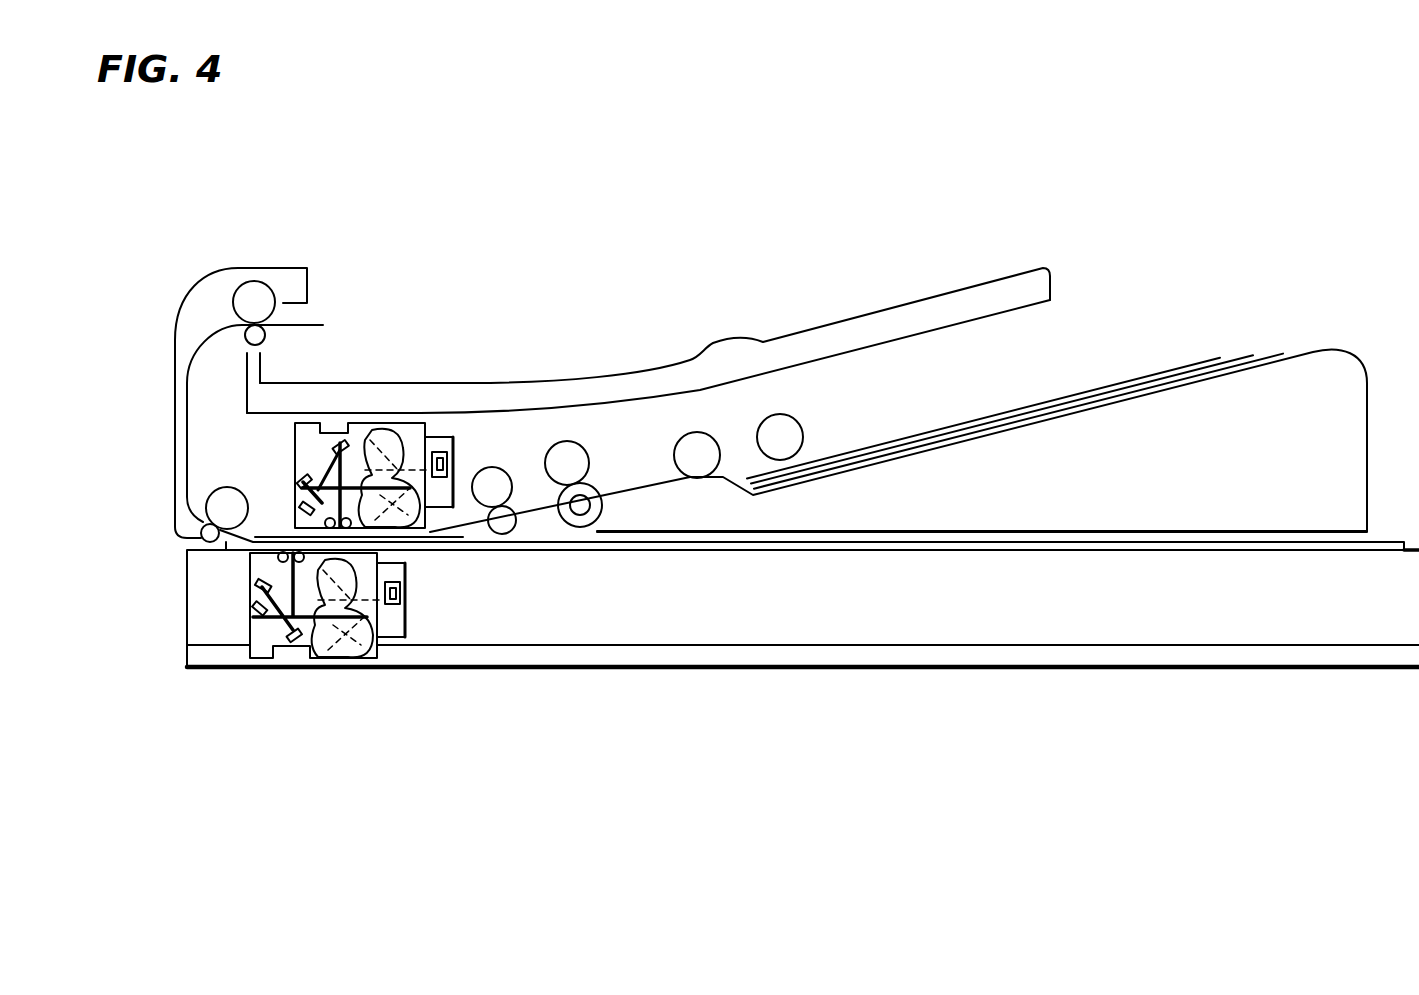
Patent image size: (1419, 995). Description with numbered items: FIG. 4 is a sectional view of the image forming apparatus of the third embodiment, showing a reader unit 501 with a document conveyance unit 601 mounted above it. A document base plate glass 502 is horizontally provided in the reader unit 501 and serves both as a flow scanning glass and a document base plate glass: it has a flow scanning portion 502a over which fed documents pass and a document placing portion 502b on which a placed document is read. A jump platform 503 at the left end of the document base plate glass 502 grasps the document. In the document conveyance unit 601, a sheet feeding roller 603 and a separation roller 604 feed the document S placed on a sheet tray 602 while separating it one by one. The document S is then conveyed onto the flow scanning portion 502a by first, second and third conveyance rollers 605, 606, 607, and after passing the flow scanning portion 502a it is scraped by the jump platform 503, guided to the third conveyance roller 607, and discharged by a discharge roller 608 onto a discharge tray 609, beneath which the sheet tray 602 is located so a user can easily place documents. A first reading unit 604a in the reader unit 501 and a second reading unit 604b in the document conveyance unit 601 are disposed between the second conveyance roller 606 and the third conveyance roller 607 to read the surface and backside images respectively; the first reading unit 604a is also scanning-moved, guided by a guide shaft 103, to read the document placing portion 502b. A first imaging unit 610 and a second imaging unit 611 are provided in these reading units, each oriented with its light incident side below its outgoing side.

The document conveyance unit 601 is at (948, 220).
The sheet tray 602 is at (858, 468).
The sheet feeding roller 603 is at (778, 437).
The separation roller 604 is at (695, 450).
The first conveyance roller 605 is at (555, 441).
The second conveyance roller 606 is at (487, 480).
The third conveyance roller 607 is at (227, 508).
The discharge roller 608 is at (255, 302).
The discharge tray 609 is at (517, 372).
The first imaging unit 610 is at (373, 643).
The second imaging unit 611 is at (410, 512).
The first reading unit 604a is at (313, 658).
The second reading unit 604b is at (340, 430).
The document base plate glass 502 is at (735, 545).
The flow scanning portion 502a is at (345, 540).
The document placing portion 502b is at (540, 542).
The jump platform 503 is at (226, 548).
The reader unit 501 is at (583, 677).
The guide shaft 103 is at (878, 658).
The document S is at (983, 413).